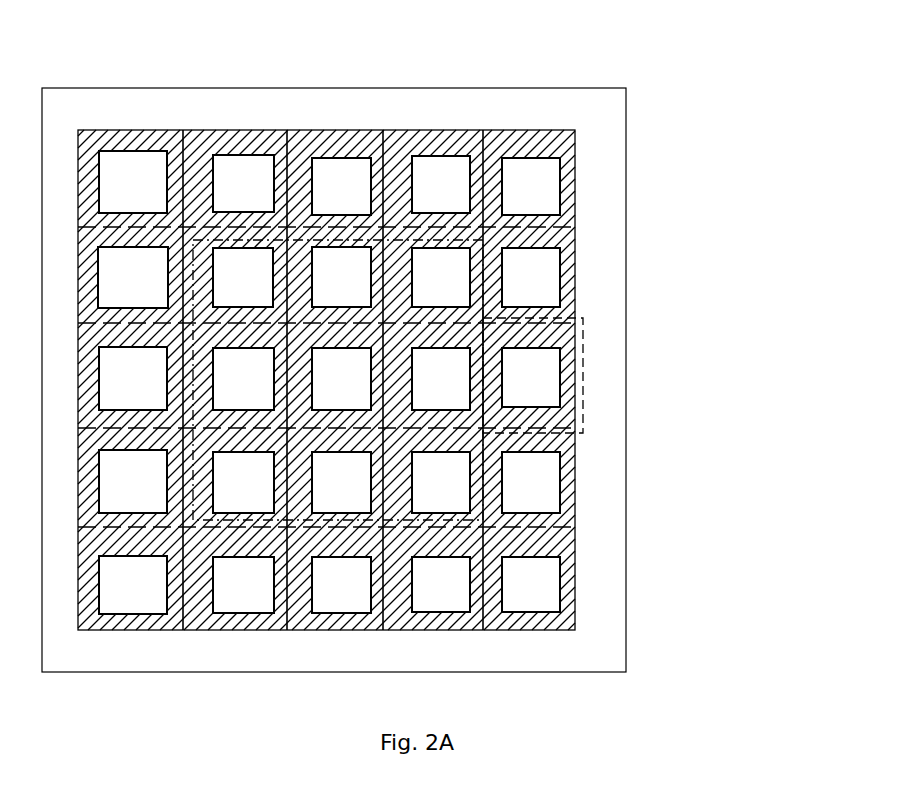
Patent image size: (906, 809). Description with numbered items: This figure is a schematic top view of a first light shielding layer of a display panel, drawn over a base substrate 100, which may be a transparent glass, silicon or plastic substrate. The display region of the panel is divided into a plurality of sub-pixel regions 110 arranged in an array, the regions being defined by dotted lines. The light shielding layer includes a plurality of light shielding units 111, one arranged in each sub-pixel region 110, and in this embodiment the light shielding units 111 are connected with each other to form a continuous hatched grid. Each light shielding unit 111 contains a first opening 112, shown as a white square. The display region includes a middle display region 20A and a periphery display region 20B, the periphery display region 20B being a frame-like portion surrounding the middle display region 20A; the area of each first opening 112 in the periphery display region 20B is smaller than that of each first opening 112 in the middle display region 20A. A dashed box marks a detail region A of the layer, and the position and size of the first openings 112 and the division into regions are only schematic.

The base substrate 100 is at (612, 270).
The sub-pixel region 110 is at (468, 135).
The light shielding unit 111 is at (574, 176).
The first opening 112 is at (535, 190).
The middle display region 20A is at (96, 120).
The periphery display region 20B is at (211, 227).
The enlarged region A is at (598, 386).